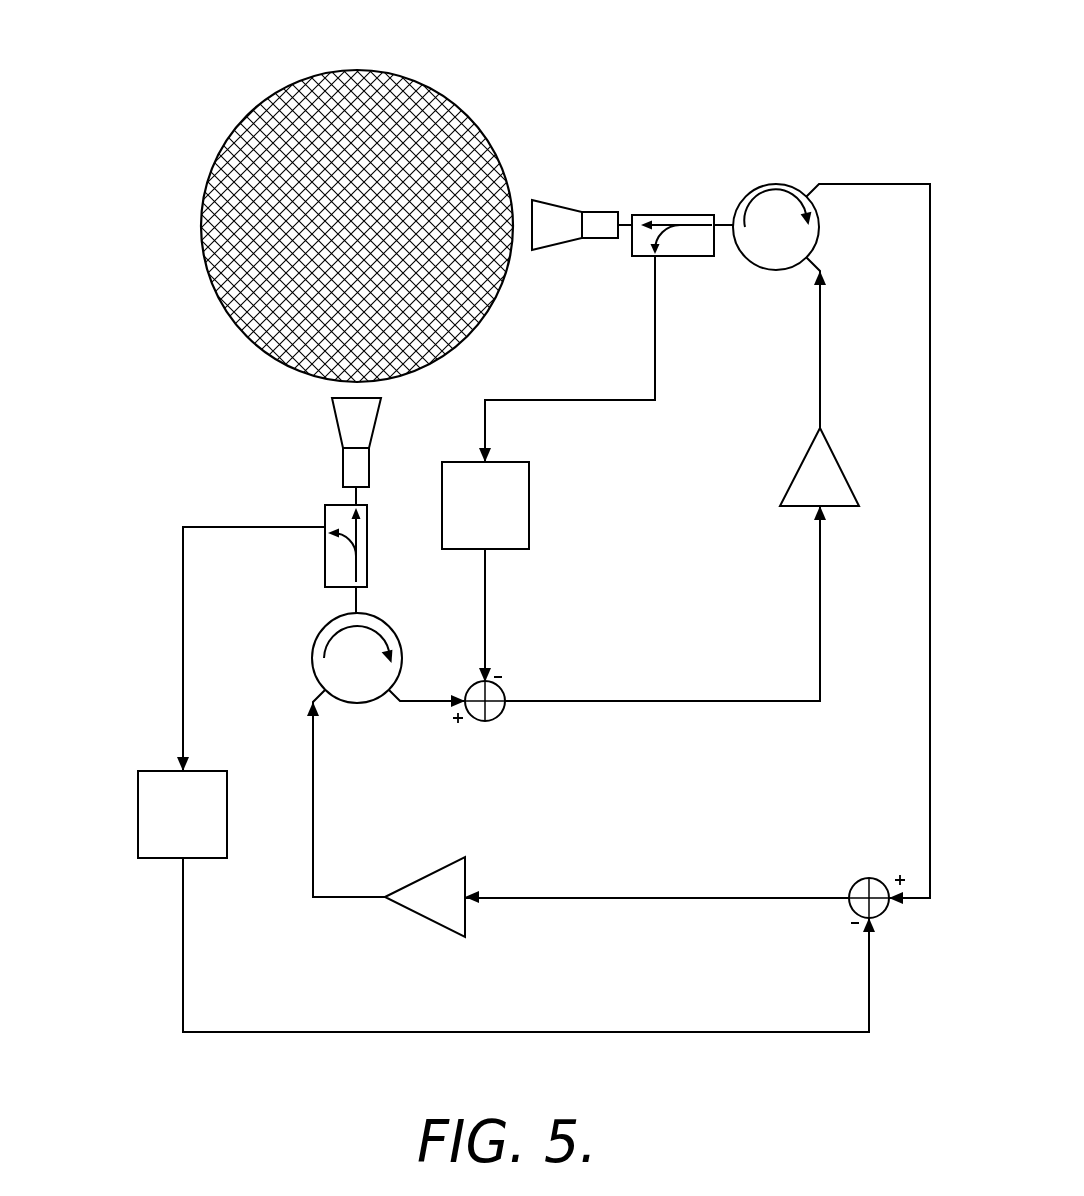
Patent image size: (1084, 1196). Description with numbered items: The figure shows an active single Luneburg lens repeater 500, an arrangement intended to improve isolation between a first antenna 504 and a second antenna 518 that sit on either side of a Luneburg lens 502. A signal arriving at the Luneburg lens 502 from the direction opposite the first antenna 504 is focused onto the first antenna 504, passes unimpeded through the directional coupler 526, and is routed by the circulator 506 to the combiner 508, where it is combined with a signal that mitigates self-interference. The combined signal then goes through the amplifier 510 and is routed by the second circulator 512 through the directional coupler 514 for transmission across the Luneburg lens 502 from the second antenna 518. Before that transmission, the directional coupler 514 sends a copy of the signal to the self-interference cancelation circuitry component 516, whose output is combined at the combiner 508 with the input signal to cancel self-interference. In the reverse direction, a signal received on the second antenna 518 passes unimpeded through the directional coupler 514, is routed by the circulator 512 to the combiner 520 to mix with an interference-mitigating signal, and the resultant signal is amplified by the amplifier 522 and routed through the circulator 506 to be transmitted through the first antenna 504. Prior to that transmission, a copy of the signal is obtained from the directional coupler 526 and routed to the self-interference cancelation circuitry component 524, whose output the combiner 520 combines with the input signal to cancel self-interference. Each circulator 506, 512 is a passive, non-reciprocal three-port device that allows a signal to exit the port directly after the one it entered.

The active single Luneburg lens repeater 500 is at (126, 134).
The Luneburg lens 502 is at (452, 103).
The first antenna 504 is at (340, 450).
The circulator 506 is at (312, 657).
The combiner 508 is at (490, 718).
The amplifier 510 is at (803, 460).
The second circulator 512 is at (779, 184).
The directional coupler 514 is at (682, 213).
The self-interference cancelation circuitry component 516 is at (530, 517).
The second antenna 518 is at (582, 210).
The combiner 520 is at (887, 912).
The amplifier 522 is at (468, 920).
The self-interference cancelation circuitry component 524 is at (210, 867).
The directional coupler 526 is at (328, 560).